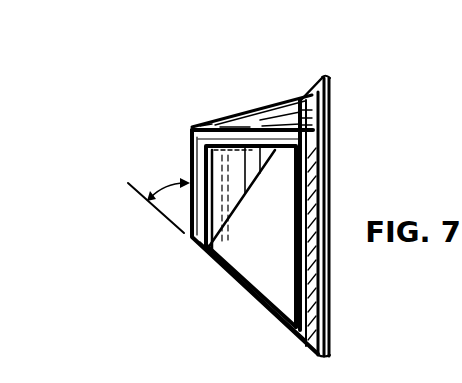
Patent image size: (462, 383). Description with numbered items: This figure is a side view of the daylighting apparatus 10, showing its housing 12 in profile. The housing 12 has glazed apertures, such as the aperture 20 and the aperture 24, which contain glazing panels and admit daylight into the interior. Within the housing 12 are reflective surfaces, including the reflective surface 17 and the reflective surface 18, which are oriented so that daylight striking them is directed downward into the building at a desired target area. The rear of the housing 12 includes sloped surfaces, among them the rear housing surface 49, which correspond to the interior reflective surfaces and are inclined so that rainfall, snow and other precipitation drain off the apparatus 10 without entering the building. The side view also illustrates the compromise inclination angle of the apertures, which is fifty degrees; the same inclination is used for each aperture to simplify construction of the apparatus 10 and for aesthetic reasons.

The apparatus 10 is at (186, 296).
The housing 12 is at (321, 84).
The reflective surface 17 is at (232, 207).
The reflective surface 18 is at (235, 182).
The aperture 20 is at (210, 252).
The aperture 24 is at (212, 162).
The rear housing surface 49 is at (270, 120).